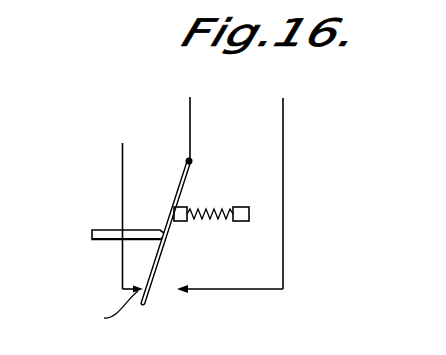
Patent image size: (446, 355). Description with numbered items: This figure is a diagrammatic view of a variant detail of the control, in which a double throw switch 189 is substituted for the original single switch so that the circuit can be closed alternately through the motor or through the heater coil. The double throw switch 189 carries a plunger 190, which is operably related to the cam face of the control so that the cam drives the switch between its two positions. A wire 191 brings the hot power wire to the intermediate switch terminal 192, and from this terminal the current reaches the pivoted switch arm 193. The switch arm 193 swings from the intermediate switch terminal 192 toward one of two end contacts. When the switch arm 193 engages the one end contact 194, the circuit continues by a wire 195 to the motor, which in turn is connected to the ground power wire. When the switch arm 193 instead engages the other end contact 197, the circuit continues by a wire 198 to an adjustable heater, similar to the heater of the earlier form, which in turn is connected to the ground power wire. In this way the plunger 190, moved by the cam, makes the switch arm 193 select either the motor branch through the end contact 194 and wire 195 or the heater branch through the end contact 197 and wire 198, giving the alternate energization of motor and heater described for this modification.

The double throw switch 189 is at (338, 225).
The plunger 190 is at (92, 235).
The wire 191 is at (190, 114).
The intermediate switch terminal 192 is at (218, 155).
The switch arm 193 is at (177, 188).
The end contact 194 is at (96, 311).
The wire 195 is at (122, 189).
The end contact 197 is at (210, 315).
The wire 198 is at (308, 127).